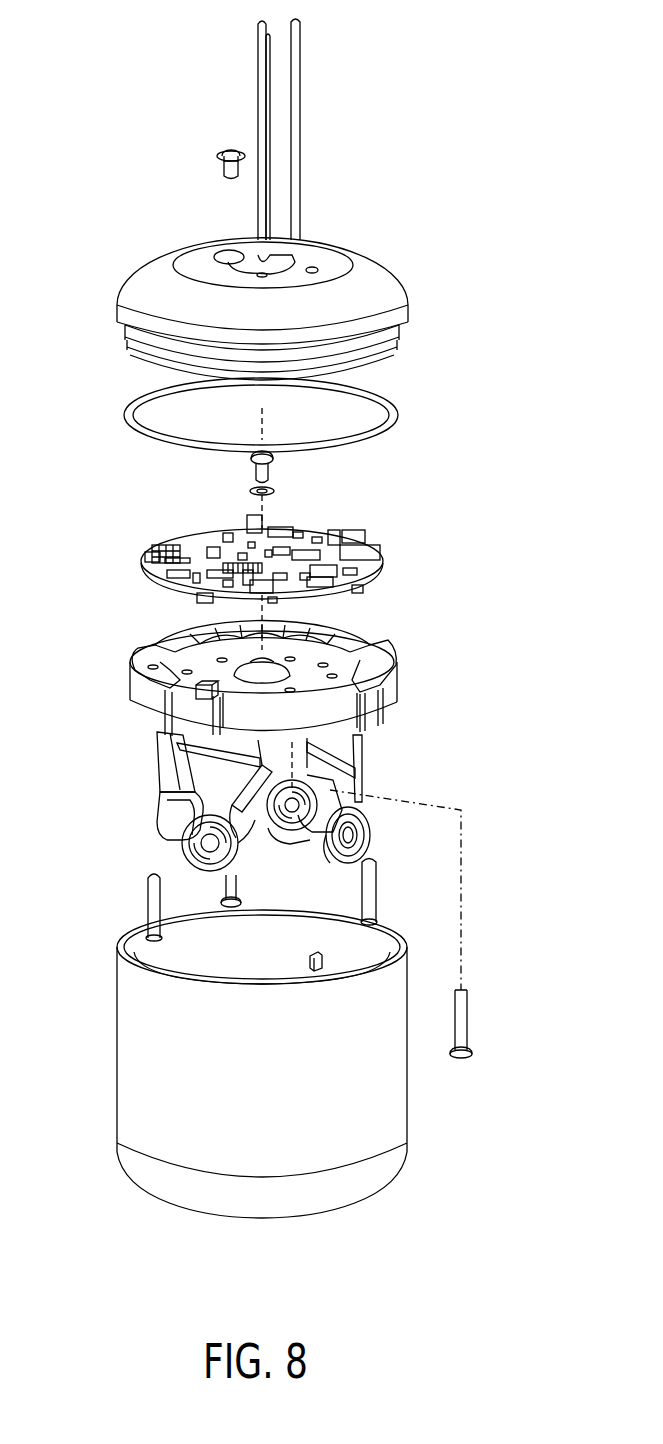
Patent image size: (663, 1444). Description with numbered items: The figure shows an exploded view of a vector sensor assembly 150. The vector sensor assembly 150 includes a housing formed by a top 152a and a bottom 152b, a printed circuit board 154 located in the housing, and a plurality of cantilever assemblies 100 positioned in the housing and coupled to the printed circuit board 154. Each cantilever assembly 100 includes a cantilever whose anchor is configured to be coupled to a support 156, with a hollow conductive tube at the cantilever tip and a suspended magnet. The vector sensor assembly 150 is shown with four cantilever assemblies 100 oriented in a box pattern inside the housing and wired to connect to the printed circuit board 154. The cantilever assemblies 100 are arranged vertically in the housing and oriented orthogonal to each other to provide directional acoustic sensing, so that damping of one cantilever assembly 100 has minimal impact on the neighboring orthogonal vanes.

The vector sensor assembly 150 is at (126, 86).
The top housing 152a is at (130, 266).
The bottom housing 152b is at (110, 999).
The printed circuit board 154 is at (155, 513).
The support 156 is at (123, 671).
The cantilever assembly 100 is at (155, 778).